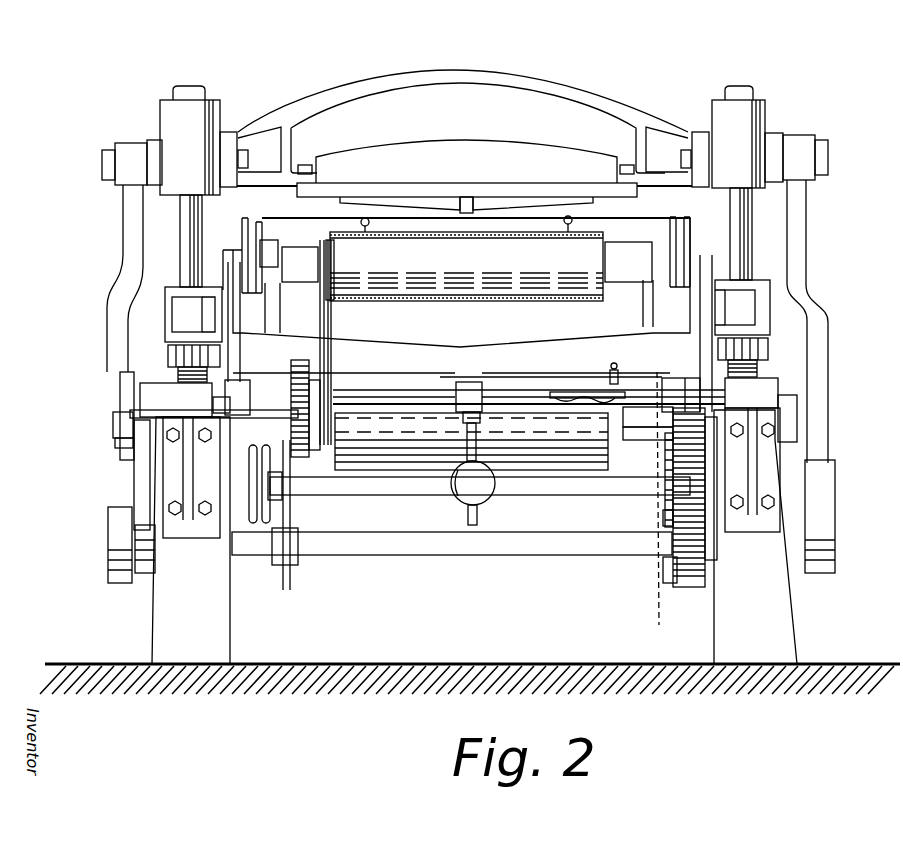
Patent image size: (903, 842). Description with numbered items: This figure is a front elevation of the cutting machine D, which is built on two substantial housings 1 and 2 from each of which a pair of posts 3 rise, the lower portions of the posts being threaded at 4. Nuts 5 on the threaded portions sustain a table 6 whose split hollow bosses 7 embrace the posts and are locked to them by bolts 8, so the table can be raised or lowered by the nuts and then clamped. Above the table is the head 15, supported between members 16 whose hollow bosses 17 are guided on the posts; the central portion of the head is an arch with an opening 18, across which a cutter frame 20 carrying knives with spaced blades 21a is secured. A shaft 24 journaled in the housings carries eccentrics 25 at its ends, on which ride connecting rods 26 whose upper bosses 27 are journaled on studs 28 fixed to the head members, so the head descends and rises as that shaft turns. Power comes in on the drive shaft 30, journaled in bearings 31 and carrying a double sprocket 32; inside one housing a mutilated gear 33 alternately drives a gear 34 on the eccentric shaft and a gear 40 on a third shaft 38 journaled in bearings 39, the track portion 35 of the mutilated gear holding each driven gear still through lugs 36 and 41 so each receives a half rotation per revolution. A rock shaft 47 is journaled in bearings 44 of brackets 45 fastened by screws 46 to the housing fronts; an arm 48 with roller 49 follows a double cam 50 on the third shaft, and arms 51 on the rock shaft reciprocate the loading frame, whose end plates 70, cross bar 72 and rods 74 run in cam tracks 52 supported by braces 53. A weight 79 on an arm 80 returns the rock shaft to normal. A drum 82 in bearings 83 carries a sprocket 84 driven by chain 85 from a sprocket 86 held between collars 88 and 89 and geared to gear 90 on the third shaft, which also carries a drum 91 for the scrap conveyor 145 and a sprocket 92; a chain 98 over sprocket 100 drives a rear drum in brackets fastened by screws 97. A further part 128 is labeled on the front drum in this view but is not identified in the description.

The housing 1 is at (191, 540).
The housing 2 is at (755, 537).
The posts 3 is at (180, 211).
The threaded portions 4 is at (207, 376).
The nuts 5 is at (168, 350).
The table 6 is at (295, 523).
The split hollow bosses 7 is at (165, 320).
The bolts 8 is at (172, 306).
The head 15 is at (445, 72).
The members 16 is at (151, 140).
The hollow bosses 17 is at (222, 116).
The opening 18 is at (445, 145).
The cutter frame 20 is at (588, 183).
The blades 21a is at (407, 198).
The shaft 24 is at (425, 555).
The eccentrics 25 is at (108, 540).
The connecting rods 26 is at (107, 333).
The bosses 27 is at (125, 143).
The studs 28 is at (102, 168).
The drive shaft 30 is at (392, 495).
The bearings 31 is at (134, 488).
The double sprocket 32 is at (271, 556).
The mutilated gear 33 is at (668, 493).
The gear 34 is at (683, 588).
The track portion 35 is at (663, 514).
The lugs 36 is at (663, 572).
The third shaft 38 is at (647, 430).
The bearings 39 is at (797, 408).
The gear 40 is at (680, 378).
The lugs 41 is at (670, 380).
The bearings 44 is at (170, 383).
The brackets 45 is at (175, 467).
The screws 46 is at (203, 428).
The rock shaft 47 is at (258, 396).
The arm 48 is at (113, 424).
The roller 49 is at (115, 444).
The double cam 50 is at (120, 387).
The arms 51 is at (240, 320).
The cam track 52 is at (272, 240).
The braces 53 is at (280, 316).
The end plates 70 is at (245, 246).
The cross bar 72 is at (445, 232).
The rods 74 is at (368, 228).
The weight 79 is at (494, 500).
The arm 80 is at (480, 436).
The drum 82 is at (466, 266).
The bearings 83 is at (467, 262).
The sprocket 84 is at (334, 268).
The chain 85 is at (331, 320).
The sprocket 86 is at (345, 424).
The collar 88 is at (214, 412).
The collar 89 is at (345, 389).
The gear 90 is at (306, 457).
The drum 91 is at (580, 390).
The sprocket 92 is at (613, 363).
The screws 97 is at (309, 373).
The chain 98 is at (278, 441).
The sprocket 100 is at (295, 562).
The roller band 128 is at (492, 232).
The scrap conveyor 145 is at (505, 376).
The cutting machine D is at (613, 85).